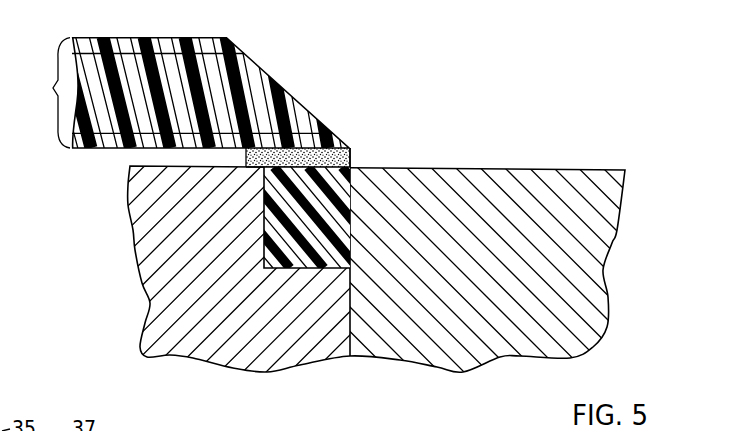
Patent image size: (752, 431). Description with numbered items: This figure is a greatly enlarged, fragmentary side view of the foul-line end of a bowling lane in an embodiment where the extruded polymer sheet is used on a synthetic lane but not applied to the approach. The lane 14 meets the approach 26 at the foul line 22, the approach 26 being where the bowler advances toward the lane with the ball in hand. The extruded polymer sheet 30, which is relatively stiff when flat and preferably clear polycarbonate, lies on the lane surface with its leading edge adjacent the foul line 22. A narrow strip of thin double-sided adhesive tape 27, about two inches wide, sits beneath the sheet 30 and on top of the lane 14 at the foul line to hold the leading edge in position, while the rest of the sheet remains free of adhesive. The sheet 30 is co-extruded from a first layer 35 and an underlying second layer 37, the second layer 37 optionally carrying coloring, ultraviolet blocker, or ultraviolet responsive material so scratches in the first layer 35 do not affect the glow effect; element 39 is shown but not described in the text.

The lane 14 is at (160, 305).
The foul line 22 is at (348, 200).
The approach 26 is at (558, 183).
The double-sided adhesive tape 27 is at (352, 158).
The extruded polymer sheet 30 is at (187, 95).
The first layer 35 is at (110, 38).
The second layer 37 is at (225, 38).
The bottom layer 39 is at (92, 148).